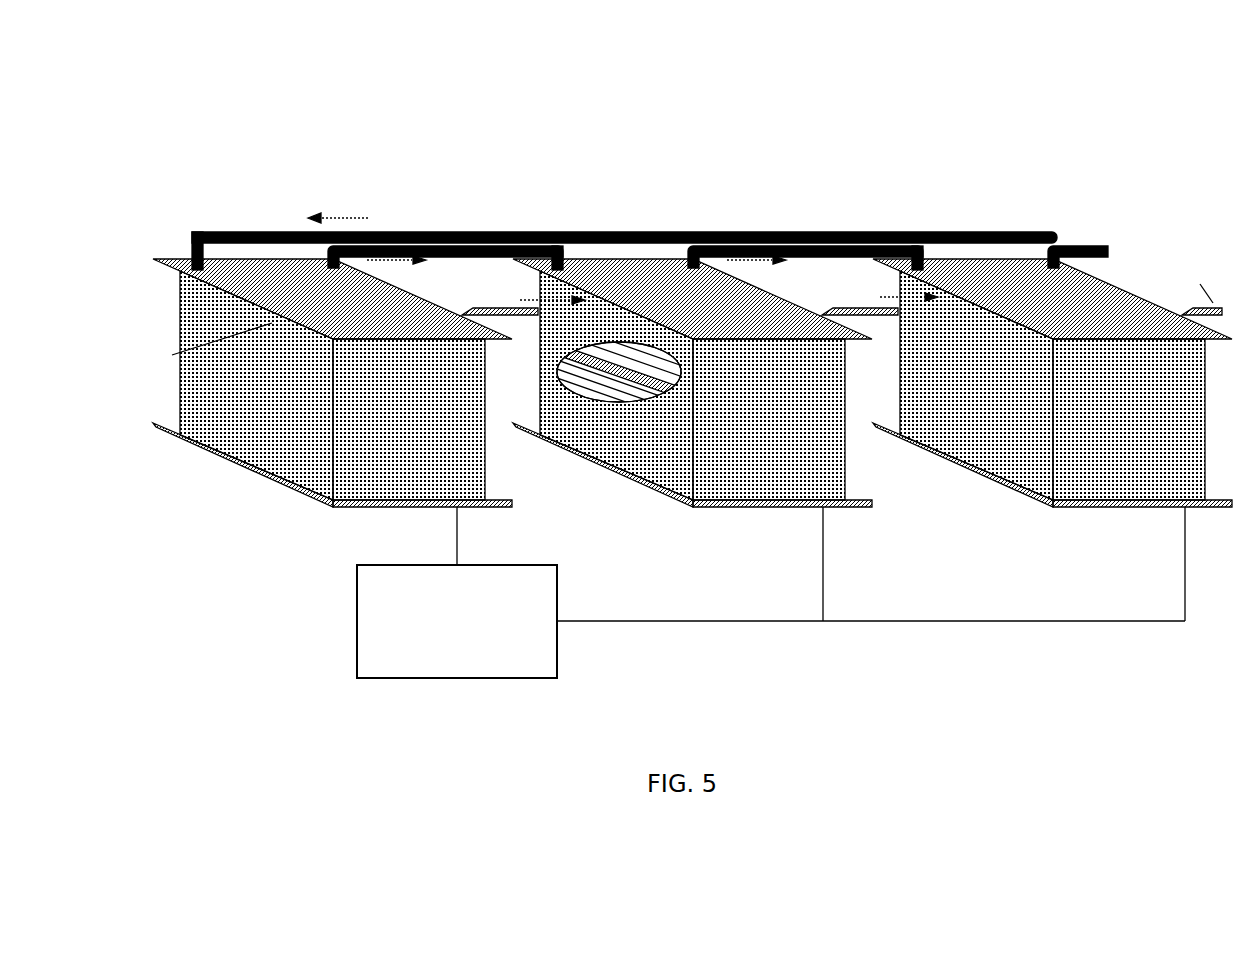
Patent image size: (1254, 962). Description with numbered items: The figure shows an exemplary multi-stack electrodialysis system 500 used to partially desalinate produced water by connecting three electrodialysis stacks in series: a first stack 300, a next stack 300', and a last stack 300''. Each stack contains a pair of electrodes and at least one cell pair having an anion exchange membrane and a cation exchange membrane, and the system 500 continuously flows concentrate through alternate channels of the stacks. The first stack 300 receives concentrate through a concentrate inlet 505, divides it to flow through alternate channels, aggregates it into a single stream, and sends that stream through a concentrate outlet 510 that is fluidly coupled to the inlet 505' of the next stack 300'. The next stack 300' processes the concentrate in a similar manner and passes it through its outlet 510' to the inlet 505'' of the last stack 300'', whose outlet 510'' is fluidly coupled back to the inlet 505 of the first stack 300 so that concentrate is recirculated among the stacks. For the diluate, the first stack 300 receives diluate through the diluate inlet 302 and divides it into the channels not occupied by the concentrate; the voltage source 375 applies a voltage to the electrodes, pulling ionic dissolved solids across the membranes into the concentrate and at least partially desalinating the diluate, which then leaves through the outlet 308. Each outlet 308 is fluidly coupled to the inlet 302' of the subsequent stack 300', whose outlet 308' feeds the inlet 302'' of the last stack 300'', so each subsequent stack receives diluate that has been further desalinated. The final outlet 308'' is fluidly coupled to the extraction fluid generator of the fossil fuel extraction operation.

The multi-stack electrodialysis system 500 is at (410, 93).
The concentrate inlet 505 is at (612, 236).
The concentrate outlet 510 is at (418, 228).
The concentrate inlet of next stack 505' is at (578, 224).
The concentrate outlet of next stack 510' is at (788, 228).
The concentrate inlet of last stack 505'' is at (937, 224).
The concentrate outlet of last stack 510'' is at (1060, 228).
The diluate inlet 302 is at (256, 385).
The diluate outlet 308 is at (409, 418).
The diluate inlet of next stack 302' is at (650, 385).
The diluate outlet of next stack 308' is at (769, 419).
The diluate inlet of last stack 302'' is at (1009, 385).
The diluate outlet of last stack 308'' is at (1129, 419).
The stack 300 is at (332, 418).
The next stack 300' is at (692, 418).
The last stack 300'' is at (1052, 418).
The voltage source 375 is at (771, 592).